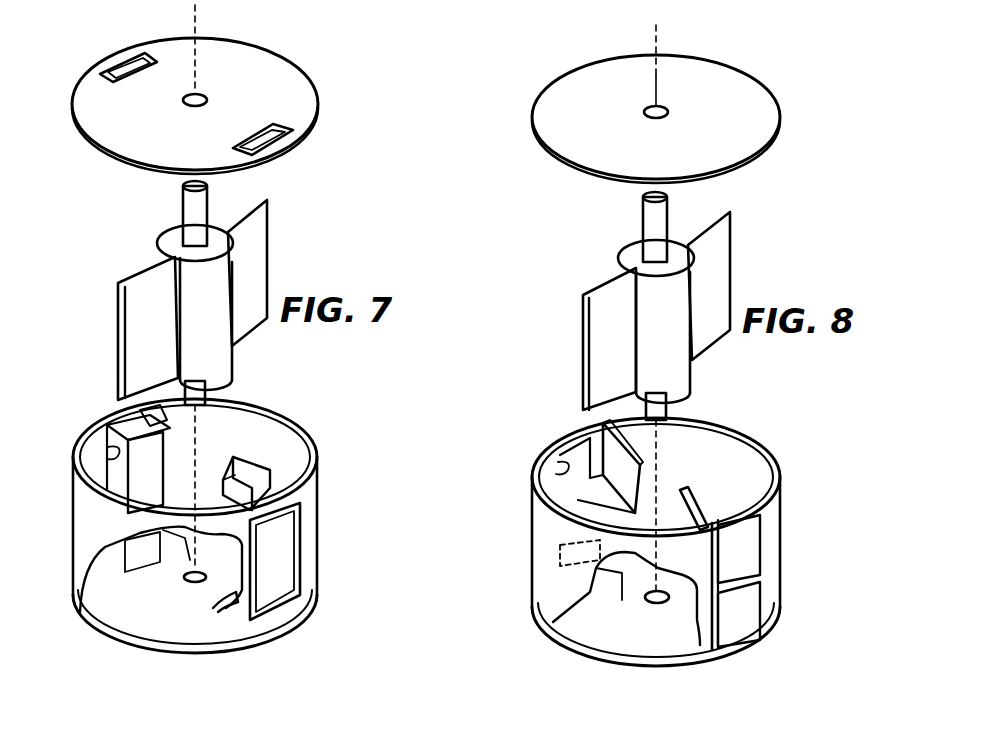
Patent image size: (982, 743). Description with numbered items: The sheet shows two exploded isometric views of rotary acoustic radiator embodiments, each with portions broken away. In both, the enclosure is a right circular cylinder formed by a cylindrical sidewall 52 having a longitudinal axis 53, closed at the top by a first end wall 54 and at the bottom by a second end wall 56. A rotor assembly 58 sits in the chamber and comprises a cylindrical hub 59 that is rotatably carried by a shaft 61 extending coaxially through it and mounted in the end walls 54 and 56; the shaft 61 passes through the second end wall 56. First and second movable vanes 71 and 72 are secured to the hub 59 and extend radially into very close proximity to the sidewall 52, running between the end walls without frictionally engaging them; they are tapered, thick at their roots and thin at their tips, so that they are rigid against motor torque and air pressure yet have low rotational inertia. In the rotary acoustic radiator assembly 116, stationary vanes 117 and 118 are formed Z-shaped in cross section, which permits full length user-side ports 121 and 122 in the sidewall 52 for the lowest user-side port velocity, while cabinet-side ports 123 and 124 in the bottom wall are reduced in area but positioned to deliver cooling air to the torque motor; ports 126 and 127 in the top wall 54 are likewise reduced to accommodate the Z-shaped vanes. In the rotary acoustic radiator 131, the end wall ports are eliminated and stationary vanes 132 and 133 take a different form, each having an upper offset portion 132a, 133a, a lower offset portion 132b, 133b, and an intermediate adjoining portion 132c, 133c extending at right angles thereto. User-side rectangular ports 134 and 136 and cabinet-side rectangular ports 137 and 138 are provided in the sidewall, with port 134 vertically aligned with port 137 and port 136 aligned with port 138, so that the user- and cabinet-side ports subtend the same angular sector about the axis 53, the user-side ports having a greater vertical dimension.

In FIG. 8, the cylindrical sidewall 52 is at (695, 668).
In FIG. 7, the longitudinal axis 53 is at (195, 94).
In FIG. 8, the longitudinal axis 53 is at (656, 82).
In FIG. 7, the first end wall 54 is at (280, 77).
In FIG. 8, the first end wall 54 is at (742, 98).
In FIG. 7, the second end wall 56 is at (92, 615).
In FIG. 8, the second end wall 56 is at (555, 636).
In FIG. 7, the rotor assembly 58 is at (224, 206).
In FIG. 8, the rotor assembly 58 is at (694, 216).
In FIG. 7, the cylindrical hub 59 is at (218, 358).
In FIG. 8, the cylindrical hub 59 is at (680, 373).
In FIG. 7, the shaft 61 is at (183, 210).
In FIG. 8, the shaft 61 is at (643, 222).
In FIG. 7, the first movable vane 71 is at (118, 322).
In FIG. 8, the first movable vane 71 is at (583, 330).
In FIG. 7, the second movable vane 72 is at (268, 252).
In FIG. 8, the second movable vane 72 is at (723, 263).
In FIG. 7, the rotary acoustic radiator assembly 116 is at (74, 255).
In FIG. 7, the stationary vane 117 is at (250, 455).
In FIG. 7, the stationary vane 118 is at (196, 432).
In FIG. 7, the user-side port 121 is at (283, 527).
In FIG. 7, the user-side port 122 is at (112, 452).
In FIG. 7, the cabinet-side port 123 is at (215, 607).
In FIG. 7, the cabinet-side port 124 is at (172, 568).
In FIG. 7, the port 126 is at (268, 150).
In FIG. 7, the port 127 is at (115, 62).
In FIG. 8, the rotary acoustic radiator 131 is at (490, 284).
In FIG. 8, the stationary vane 132 is at (714, 496).
In FIG. 8, the upper offset portion 132a is at (763, 486).
In FIG. 8, the lower offset portion 132b is at (725, 610).
In FIG. 8, the intermediate adjoining portion 132c is at (725, 557).
In FIG. 8, the stationary vane 133 is at (648, 451).
In FIG. 8, the upper offset portion 133a is at (643, 476).
In FIG. 8, the lower offset portion 133b is at (622, 573).
In FIG. 8, the intermediate adjoining portion 133c is at (592, 440).
In FIG. 8, the user-side rectangular port 134 is at (762, 532).
In FIG. 8, the user-side rectangular port 136 is at (555, 470).
In FIG. 8, the cabinet-side rectangular port 137 is at (762, 572).
In FIG. 8, the cabinet-side rectangular port 138 is at (560, 553).